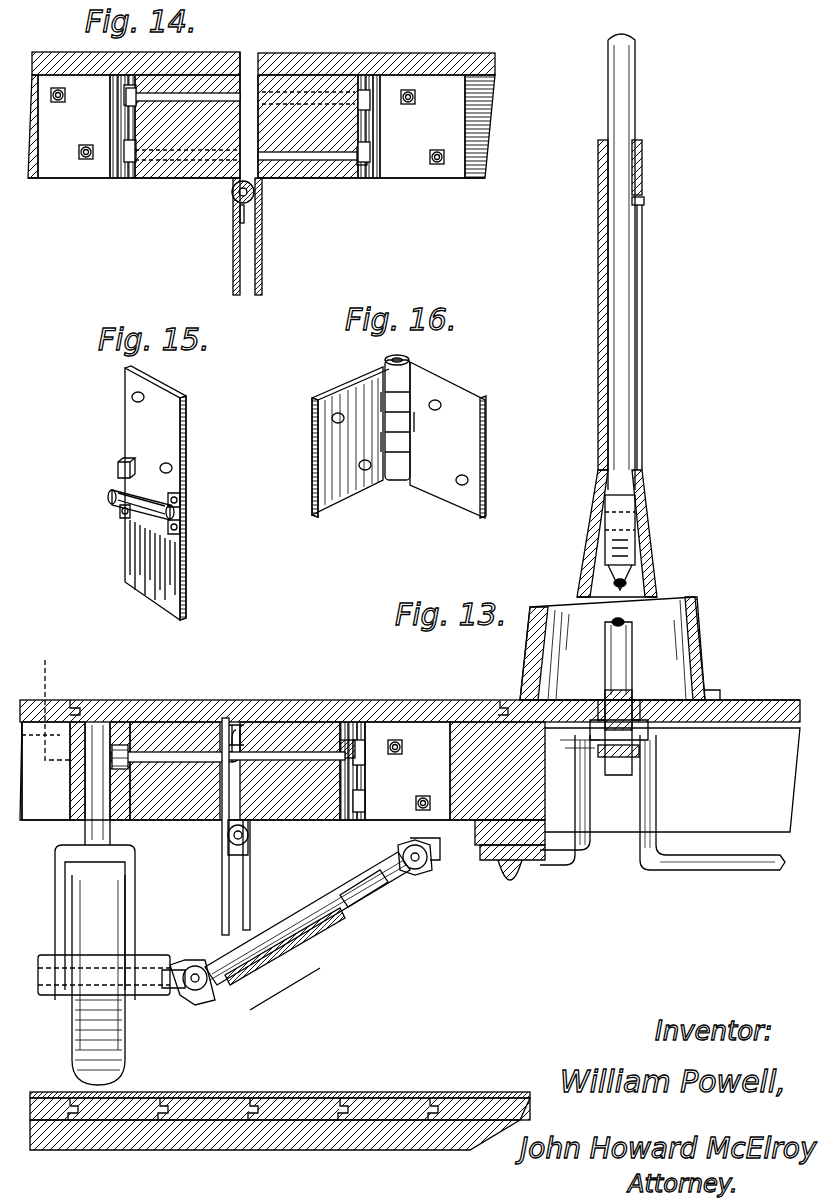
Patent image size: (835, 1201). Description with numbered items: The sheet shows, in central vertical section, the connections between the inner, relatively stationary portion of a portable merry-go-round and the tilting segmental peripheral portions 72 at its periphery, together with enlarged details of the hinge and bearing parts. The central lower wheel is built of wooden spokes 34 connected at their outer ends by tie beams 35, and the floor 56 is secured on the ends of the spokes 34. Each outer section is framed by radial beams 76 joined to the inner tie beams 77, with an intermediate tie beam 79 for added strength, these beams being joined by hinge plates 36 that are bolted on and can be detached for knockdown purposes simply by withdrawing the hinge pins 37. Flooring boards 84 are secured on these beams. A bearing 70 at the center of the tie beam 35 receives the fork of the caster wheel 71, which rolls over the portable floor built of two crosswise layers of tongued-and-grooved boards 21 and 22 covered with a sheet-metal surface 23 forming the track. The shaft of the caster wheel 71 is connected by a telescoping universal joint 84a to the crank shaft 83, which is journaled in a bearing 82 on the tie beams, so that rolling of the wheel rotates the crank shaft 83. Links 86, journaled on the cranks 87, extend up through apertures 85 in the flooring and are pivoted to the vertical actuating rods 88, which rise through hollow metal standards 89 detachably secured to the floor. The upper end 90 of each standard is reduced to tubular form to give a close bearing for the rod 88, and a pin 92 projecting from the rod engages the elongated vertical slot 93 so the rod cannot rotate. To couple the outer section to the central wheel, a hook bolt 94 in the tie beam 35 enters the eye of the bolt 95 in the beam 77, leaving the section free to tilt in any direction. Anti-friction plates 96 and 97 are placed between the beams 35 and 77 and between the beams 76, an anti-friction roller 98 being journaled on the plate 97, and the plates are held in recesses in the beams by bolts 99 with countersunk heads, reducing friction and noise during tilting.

In FIG. 13, the layer of tongued-and-grooved boards 21 is at (335, 1082).
In FIG. 13, the layer of tongued-and-grooved boards 22 is at (330, 1152).
In FIG. 13, the sheet-metal surface 23 is at (388, 1094).
In FIG. 14, the spokes 34 is at (485, 150).
In FIG. 13, the spokes 34 is at (28, 822).
In FIG. 14, the tie beams 35 is at (338, 178).
In FIG. 13, the tie beams 35 is at (180, 720).
In FIG. 14, the hinge plate 36 is at (85, 172).
In FIG. 16, the hinge plate 36 is at (372, 490).
In FIG. 13, the hinge plate 36 is at (410, 722).
In FIG. 16, the hinge pins 37 is at (410, 360).
In FIG. 14, the floor 56 is at (496, 66).
In FIG. 13, the floor 56 is at (70, 698).
In FIG. 13, the bearing 70 is at (120, 825).
In FIG. 13, the caster wheel 71 is at (80, 1012).
In FIG. 14, the segmental peripheral portions 72 is at (125, 180).
In FIG. 13, the segmental peripheral portions 72 is at (332, 698).
In FIG. 13, the radial beams 76 is at (780, 722).
In FIG. 14, the inner tie beams 77 is at (175, 178).
In FIG. 13, the inner tie beams 77 is at (325, 822).
In FIG. 14, the tie beam 79 is at (30, 180).
In FIG. 13, the tie beam 79 is at (470, 720).
In FIG. 13, the bearing 82 is at (528, 878).
In FIG. 13, the crank shaft 83 is at (768, 870).
In FIG. 14, the flooring boards 84 is at (45, 55).
In FIG. 13, the flooring boards 84 is at (755, 700).
In FIG. 13, the telescoping universal joint 84a is at (258, 955).
In FIG. 13, the apertures 85 is at (672, 722).
In FIG. 13, the links 86 is at (640, 605).
In FIG. 13, the cranks 87 is at (640, 830).
In FIG. 13, the vertical actuating rods 88 is at (620, 312).
In FIG. 13, the hollow metal standards 89 is at (662, 600).
In FIG. 13, the upper end of standard 90 is at (598, 258).
In FIG. 13, the pin 92 is at (645, 203).
In FIG. 13, the vertical slot 93 is at (643, 398).
In FIG. 13, the hook bolt 94 is at (236, 722).
In FIG. 13, the eye bolt 95 is at (240, 735).
In FIG. 14, the anti-friction plate 96 is at (262, 225).
In FIG. 13, the anti-friction plate 96 is at (222, 885).
In FIG. 14, the anti-friction plate 97 is at (233, 252).
In FIG. 15, the anti-friction plate 97 is at (132, 552).
In FIG. 13, the anti-friction plate 97 is at (250, 885).
In FIG. 14, the anti-friction roller 98 is at (232, 200).
In FIG. 15, the anti-friction roller 98 is at (135, 522).
In FIG. 13, the anti-friction roller 98 is at (228, 842).
In FIG. 14, the bolts 99 is at (205, 78).
In FIG. 13, the bolts 99 is at (368, 797).